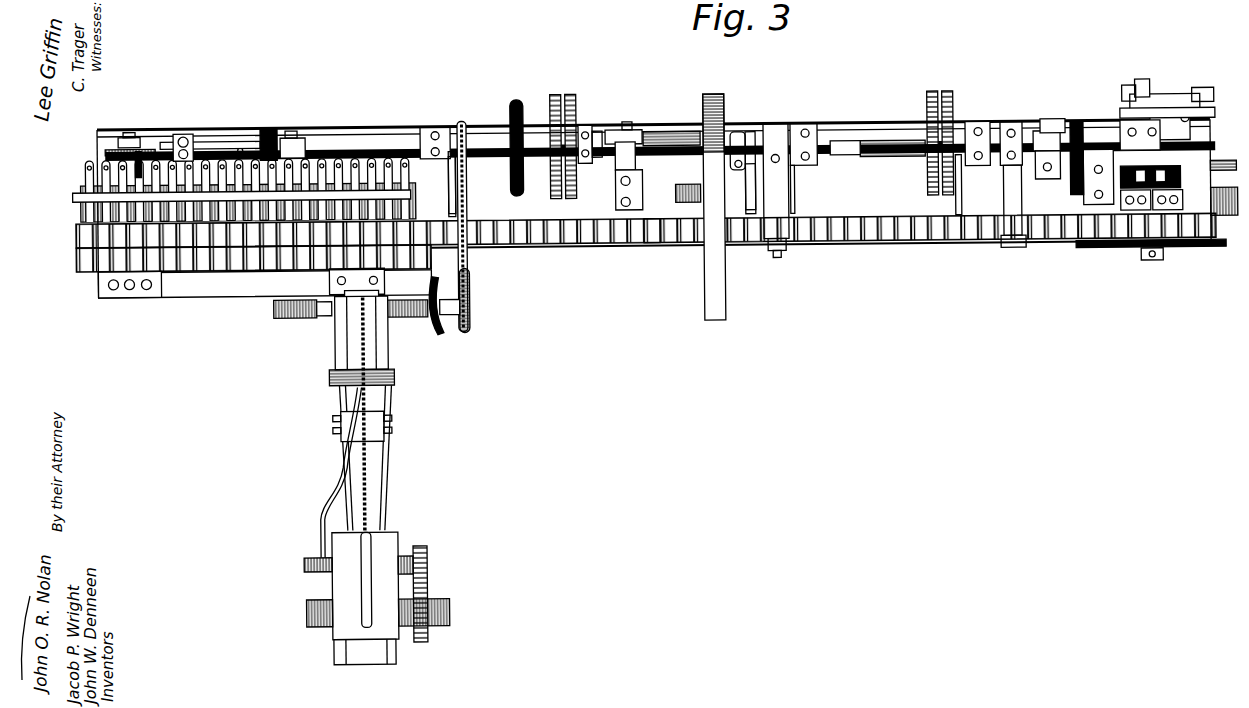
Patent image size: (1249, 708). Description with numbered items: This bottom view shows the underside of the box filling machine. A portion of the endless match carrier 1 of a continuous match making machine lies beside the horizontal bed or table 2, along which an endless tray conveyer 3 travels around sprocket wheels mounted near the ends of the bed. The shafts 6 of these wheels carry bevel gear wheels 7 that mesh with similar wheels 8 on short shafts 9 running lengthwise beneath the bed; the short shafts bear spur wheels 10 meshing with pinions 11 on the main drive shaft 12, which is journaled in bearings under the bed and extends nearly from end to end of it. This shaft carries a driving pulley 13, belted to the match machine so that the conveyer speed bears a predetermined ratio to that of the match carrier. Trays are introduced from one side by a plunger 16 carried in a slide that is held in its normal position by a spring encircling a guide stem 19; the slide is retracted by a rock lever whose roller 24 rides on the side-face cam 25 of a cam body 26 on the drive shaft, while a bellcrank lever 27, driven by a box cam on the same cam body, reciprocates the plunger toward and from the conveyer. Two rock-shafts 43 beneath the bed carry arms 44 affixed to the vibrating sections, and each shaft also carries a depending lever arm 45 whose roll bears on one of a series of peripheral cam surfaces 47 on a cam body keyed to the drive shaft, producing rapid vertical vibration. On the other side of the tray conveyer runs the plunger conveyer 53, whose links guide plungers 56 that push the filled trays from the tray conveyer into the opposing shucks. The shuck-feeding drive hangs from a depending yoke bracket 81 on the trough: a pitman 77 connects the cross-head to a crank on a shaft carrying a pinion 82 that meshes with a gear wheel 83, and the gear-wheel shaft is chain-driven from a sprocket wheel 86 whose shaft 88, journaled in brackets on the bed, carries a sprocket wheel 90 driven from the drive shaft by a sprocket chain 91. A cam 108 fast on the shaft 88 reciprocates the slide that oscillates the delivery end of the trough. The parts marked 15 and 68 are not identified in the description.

The endless match carrier 1 is at (882, 246).
The bed 2 is at (216, 298).
The tray conveyer 3 is at (76, 235).
The shafts 6 is at (128, 134).
The bevel gear wheels 7 is at (143, 150).
The bevel gear wheels 8 is at (165, 148).
The short shafts 9 is at (206, 160).
The spur wheels 10 is at (267, 128).
The pinions 11 is at (284, 142).
The main drive shaft 12 is at (882, 154).
The driving pulley 13 is at (723, 101).
The chain link 15 is at (652, 246).
The plunger 16 is at (1144, 82).
The guide stem 19 is at (80, 262).
The roller 24 is at (1200, 196).
The side-face cam 25 is at (1170, 112).
The cam body 26 is at (1215, 166).
The bellcrank lever 27 is at (1135, 92).
The rock-shafts 43 is at (598, 130).
The arms 44 is at (451, 190).
The depending lever arm 45 is at (577, 124).
The peripheral cam surfaces 47 is at (563, 97).
The plunger conveyer 53 is at (75, 197).
The plungers 56 is at (82, 168).
The coupling box 68 is at (392, 462).
The pitman 77 is at (318, 501).
The yoke bracket 81 is at (367, 497).
The pinion 82 is at (428, 556).
The gear wheel 83 is at (430, 632).
The sprocket wheel 86 is at (372, 330).
The shaft 88 is at (309, 319).
The sprocket wheel 90 is at (471, 320).
The sprocket chain 91 is at (468, 200).
The cam 108 is at (441, 332).